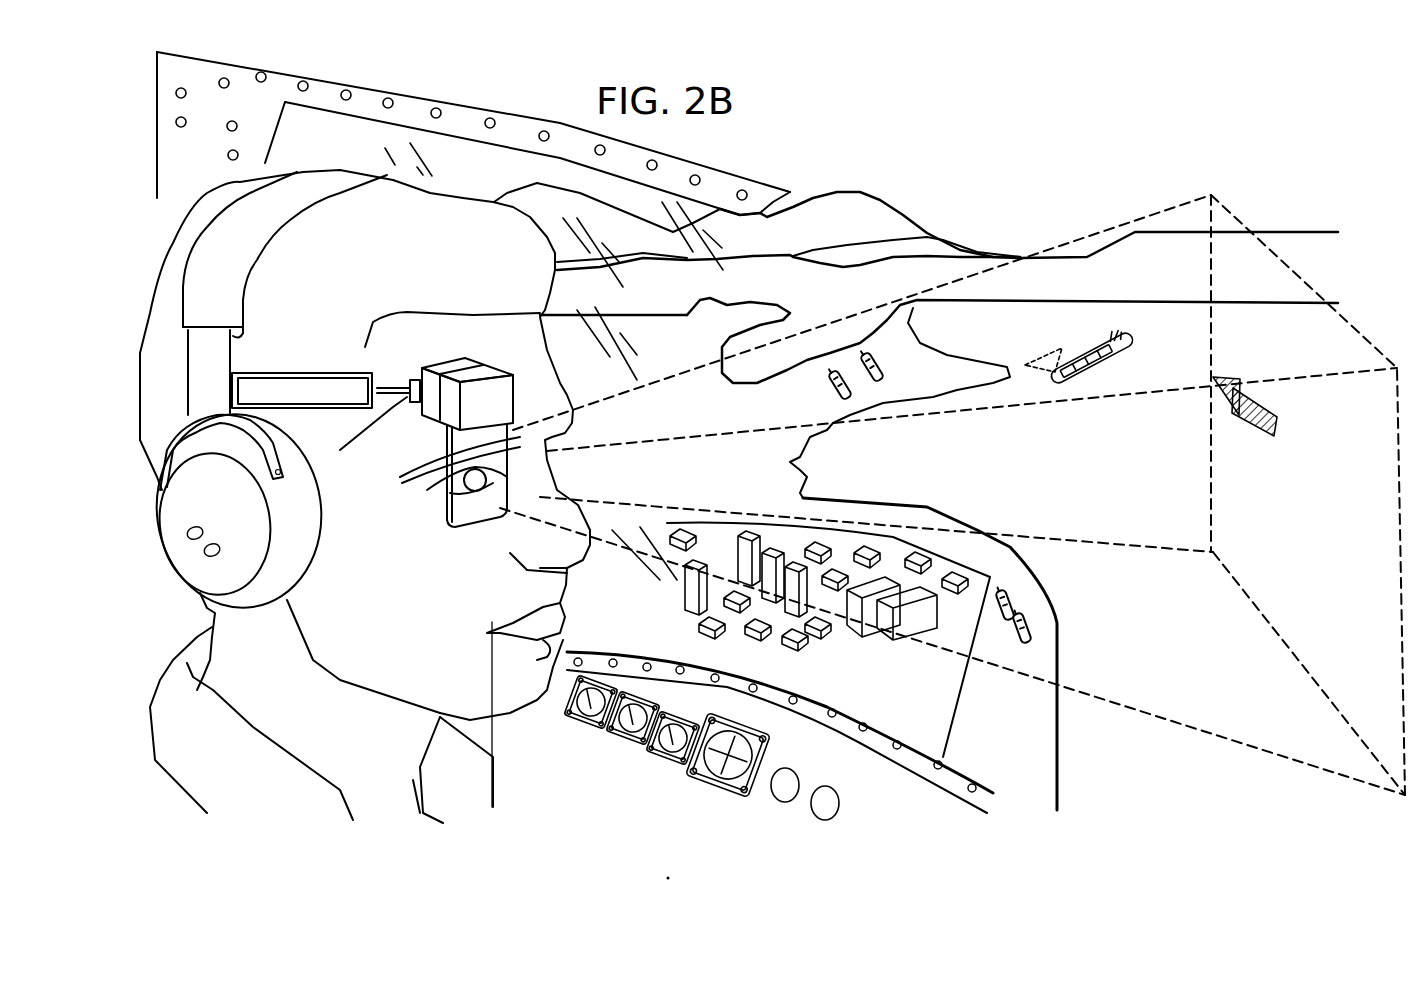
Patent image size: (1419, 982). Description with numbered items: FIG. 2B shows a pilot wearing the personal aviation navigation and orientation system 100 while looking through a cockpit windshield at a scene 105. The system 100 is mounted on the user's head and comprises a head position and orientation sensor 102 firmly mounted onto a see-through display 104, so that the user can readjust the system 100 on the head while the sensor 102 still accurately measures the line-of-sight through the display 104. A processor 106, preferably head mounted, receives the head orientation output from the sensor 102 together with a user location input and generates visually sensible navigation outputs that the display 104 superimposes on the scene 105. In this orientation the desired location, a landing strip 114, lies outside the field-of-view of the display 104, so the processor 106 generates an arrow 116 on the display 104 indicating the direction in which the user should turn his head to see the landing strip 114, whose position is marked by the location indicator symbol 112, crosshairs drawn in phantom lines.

The personal aviation navigation and orientation system 100 is at (478, 415).
The head position and orientation sensor 102 is at (491, 382).
The display 104 is at (458, 513).
The scene 105 is at (1260, 590).
The processor 106 is at (473, 363).
The location indicator symbol 112 is at (1048, 347).
The landing strip 114 is at (1113, 368).
The arrow 116 is at (1247, 417).